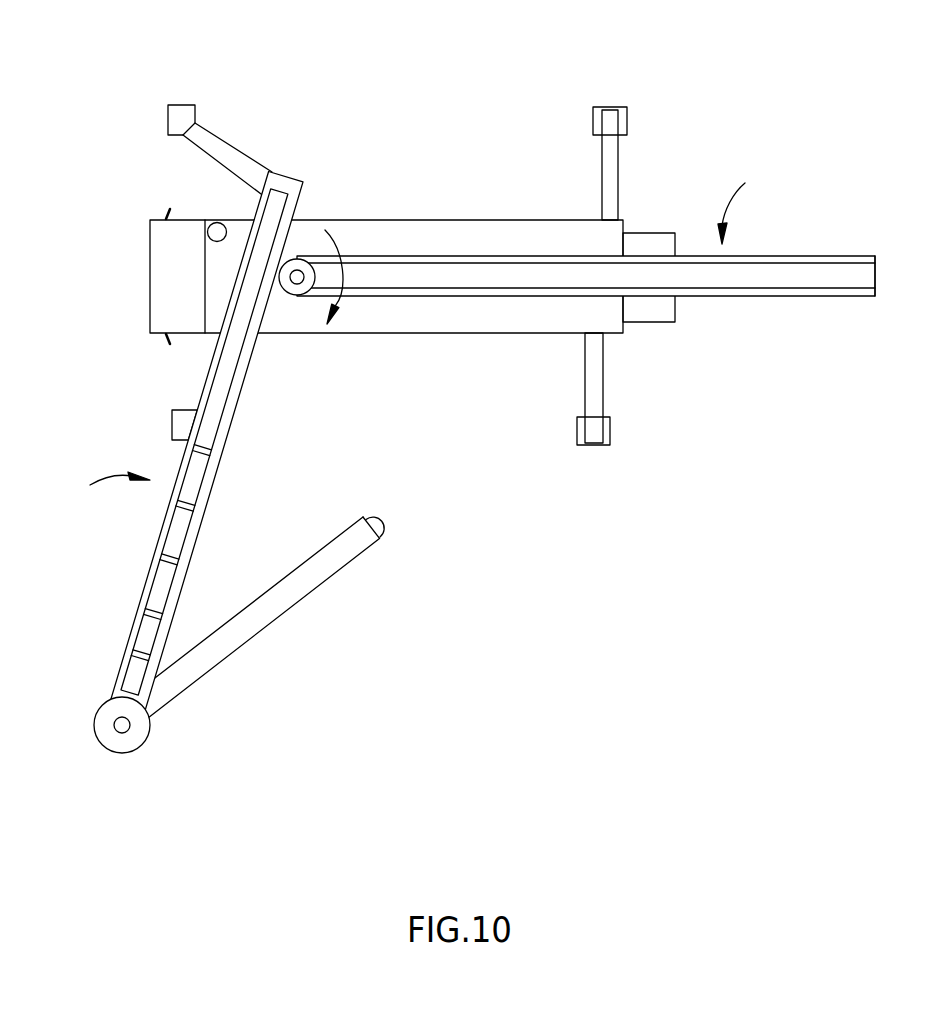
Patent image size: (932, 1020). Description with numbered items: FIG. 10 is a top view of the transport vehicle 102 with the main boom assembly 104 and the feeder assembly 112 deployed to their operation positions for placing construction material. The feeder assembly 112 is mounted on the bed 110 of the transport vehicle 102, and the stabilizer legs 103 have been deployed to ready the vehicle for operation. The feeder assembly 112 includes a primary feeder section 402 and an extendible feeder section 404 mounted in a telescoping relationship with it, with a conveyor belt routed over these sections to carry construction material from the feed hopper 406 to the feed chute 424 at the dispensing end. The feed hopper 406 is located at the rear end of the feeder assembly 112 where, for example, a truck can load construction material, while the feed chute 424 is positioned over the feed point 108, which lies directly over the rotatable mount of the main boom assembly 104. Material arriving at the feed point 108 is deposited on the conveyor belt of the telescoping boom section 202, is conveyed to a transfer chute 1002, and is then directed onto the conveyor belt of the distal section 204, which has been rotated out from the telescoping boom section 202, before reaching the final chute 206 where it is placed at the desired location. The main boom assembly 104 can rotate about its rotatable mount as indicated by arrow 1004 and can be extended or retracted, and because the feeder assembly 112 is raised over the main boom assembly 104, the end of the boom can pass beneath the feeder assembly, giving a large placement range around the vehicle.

The transport vehicle 102 is at (150, 245).
The stabilizer legs 103 is at (607, 107).
The main boom assembly 104 is at (99, 486).
The feed point 108 is at (255, 275).
The bed 110 is at (445, 220).
The feeder assembly 112 is at (749, 201).
The telescoping boom section 202 is at (152, 567).
The distal section 204 is at (275, 622).
The transfer chute 206 is at (382, 525).
The primary feeder section 402 is at (645, 277).
The extendible feeder section 404 is at (362, 278).
The feed hopper 406 is at (870, 255).
The feed chute 424 is at (298, 254).
The transfer chute 1002 is at (148, 732).
The arrow 1004 is at (342, 300).